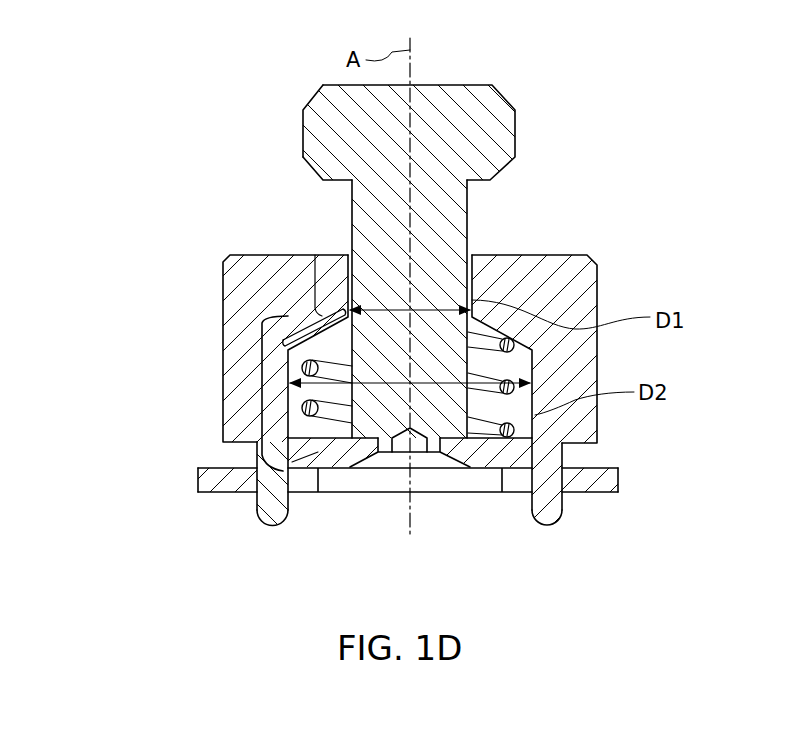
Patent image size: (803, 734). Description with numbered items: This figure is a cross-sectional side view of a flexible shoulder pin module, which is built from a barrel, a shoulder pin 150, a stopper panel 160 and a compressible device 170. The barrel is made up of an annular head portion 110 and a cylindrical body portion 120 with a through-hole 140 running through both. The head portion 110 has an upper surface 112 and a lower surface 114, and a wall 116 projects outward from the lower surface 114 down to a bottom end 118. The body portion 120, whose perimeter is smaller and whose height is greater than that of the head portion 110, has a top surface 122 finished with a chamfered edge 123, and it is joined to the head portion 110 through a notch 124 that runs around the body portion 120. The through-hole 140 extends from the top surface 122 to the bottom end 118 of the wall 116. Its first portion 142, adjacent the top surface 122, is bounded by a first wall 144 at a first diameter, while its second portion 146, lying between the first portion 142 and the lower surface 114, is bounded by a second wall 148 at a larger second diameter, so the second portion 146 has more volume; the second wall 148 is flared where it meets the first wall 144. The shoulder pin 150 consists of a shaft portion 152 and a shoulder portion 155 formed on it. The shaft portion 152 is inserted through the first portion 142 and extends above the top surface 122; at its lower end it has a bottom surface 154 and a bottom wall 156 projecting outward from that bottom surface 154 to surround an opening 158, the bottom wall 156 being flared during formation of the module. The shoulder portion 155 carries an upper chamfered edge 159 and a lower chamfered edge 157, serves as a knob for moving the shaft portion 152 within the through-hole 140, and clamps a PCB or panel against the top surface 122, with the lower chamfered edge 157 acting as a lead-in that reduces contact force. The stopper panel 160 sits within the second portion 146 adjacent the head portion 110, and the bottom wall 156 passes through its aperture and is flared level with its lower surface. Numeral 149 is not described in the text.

The head portion 110 is at (621, 485).
The upper surface 112 is at (205, 468).
The lower surface 114 is at (215, 492).
The wall 116 is at (288, 510).
The bottom end 118 is at (272, 527).
The body portion 120 is at (591, 260).
The top surface 122 is at (247, 253).
The chamfered edge 123 is at (232, 256).
The notch 124 is at (563, 453).
The through-hole 140 is at (290, 388).
The first portion 142 is at (315, 292).
The first wall 144 is at (470, 276).
The second portion 146 is at (299, 405).
The second wall 148 is at (528, 364).
The retaining lip 149 is at (283, 326).
The shoulder pin 150 is at (416, 82).
The shaft portion 152 is at (352, 218).
The bottom surface 154 is at (363, 443).
The shoulder portion 155 is at (463, 114).
The bottom wall 156 is at (392, 470).
The lower chamfered edge 157 is at (308, 170).
The opening 158 is at (420, 447).
The upper chamfered edge 159 is at (310, 93).
The stopper panel 160 is at (290, 470).
The compressible device 170 is at (500, 418).